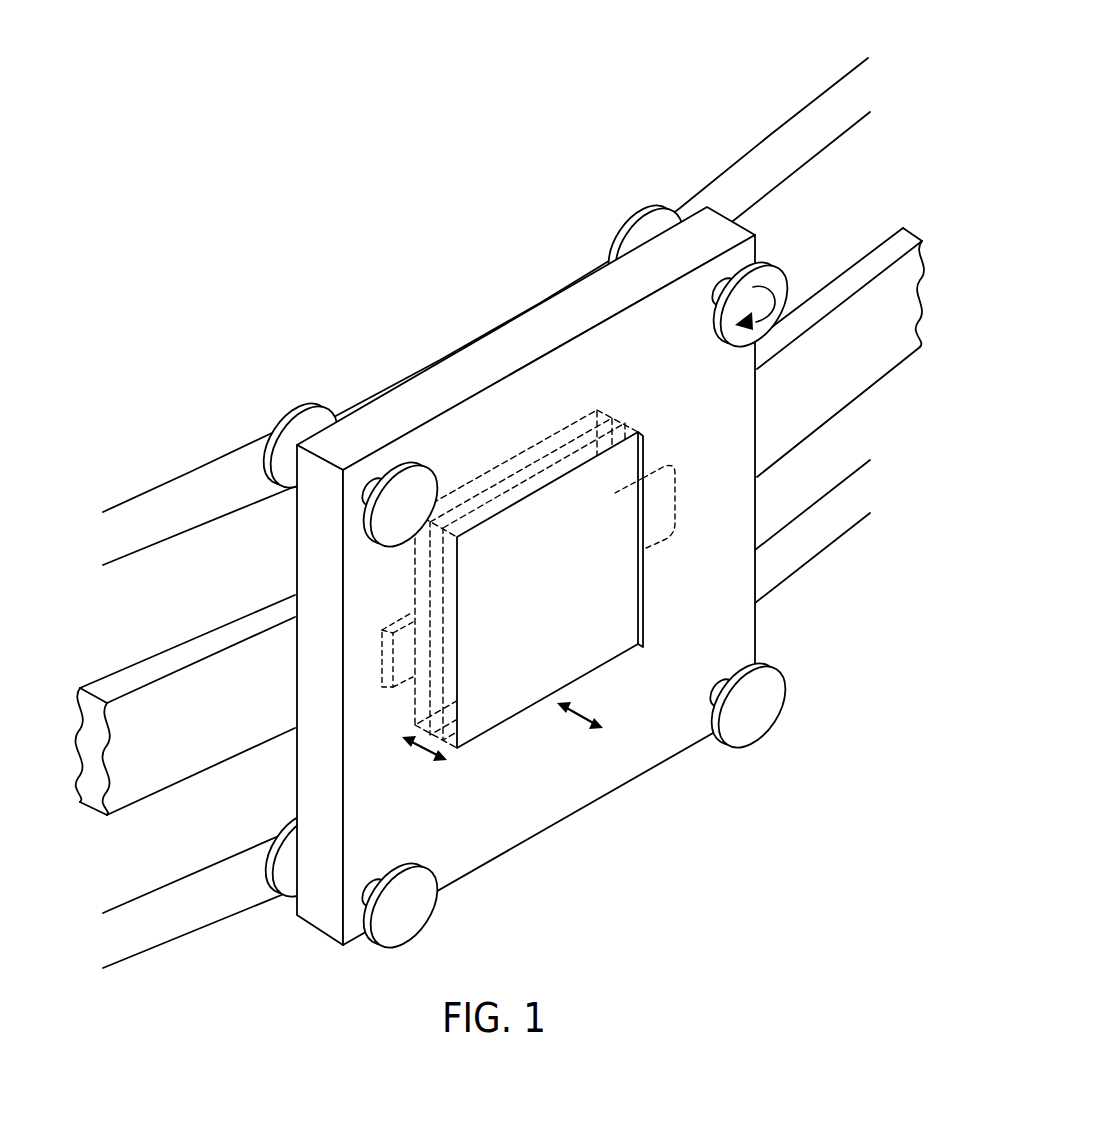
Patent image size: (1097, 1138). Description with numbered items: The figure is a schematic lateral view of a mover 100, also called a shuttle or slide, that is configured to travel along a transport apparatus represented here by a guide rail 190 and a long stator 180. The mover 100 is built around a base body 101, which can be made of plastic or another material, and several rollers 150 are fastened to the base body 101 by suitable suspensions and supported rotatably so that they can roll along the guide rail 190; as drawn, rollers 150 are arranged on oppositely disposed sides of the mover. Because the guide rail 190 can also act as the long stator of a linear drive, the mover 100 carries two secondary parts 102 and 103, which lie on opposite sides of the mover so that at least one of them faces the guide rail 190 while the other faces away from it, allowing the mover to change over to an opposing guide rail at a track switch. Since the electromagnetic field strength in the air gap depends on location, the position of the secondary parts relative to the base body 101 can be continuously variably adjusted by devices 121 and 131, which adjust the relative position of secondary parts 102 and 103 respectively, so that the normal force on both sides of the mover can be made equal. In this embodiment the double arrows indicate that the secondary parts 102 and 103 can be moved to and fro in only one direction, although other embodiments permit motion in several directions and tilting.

The mover 100 is at (709, 84).
The base body 101 is at (745, 397).
The secondary part 102 is at (644, 611).
The secondary part 103 is at (600, 408).
The device for the adjustment of the relative position 121 is at (663, 497).
The device for the adjustment of the relative position 131 is at (403, 652).
The roller 150 is at (778, 292).
The long stator 180 is at (167, 768).
The guide rail 190 is at (193, 483).